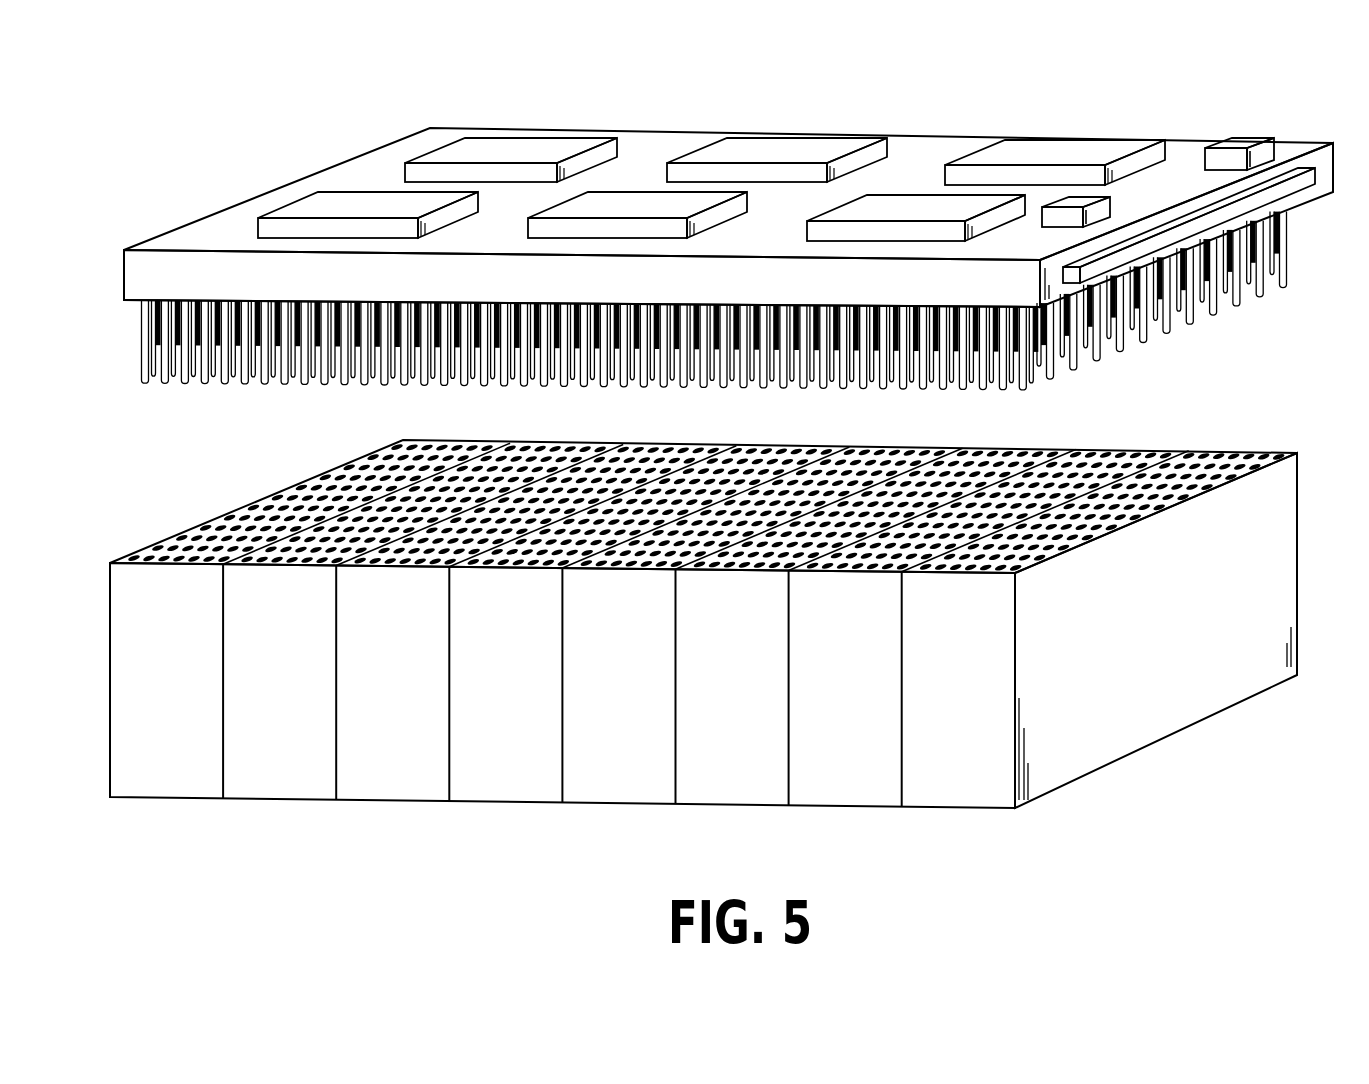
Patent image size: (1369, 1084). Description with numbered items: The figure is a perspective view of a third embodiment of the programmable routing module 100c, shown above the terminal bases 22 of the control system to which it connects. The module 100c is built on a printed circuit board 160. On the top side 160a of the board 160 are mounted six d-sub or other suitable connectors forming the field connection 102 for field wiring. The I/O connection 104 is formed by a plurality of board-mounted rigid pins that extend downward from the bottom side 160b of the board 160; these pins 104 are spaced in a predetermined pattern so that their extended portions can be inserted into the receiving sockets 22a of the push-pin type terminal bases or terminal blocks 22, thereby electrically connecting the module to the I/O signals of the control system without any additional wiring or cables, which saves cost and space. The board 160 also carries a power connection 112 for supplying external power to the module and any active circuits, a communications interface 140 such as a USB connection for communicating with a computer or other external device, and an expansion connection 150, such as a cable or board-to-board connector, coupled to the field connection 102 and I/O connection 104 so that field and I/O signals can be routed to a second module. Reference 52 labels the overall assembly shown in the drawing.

The electronic assembly 52 is at (100, 79).
The programmable routing module 100c is at (123, 275).
The printed circuit board 160 is at (302, 179).
The top side of the board 160a is at (413, 145).
The bottom side of the board 160b is at (132, 304).
The field connection 102 is at (262, 229).
The I/O connection 104 is at (115, 376).
The communications interface 140 is at (1072, 224).
The power connection 112 is at (1265, 150).
The expansion connection 150 is at (1283, 190).
The terminal bases 22 is at (180, 700).
The receiving sockets 22a is at (175, 532).